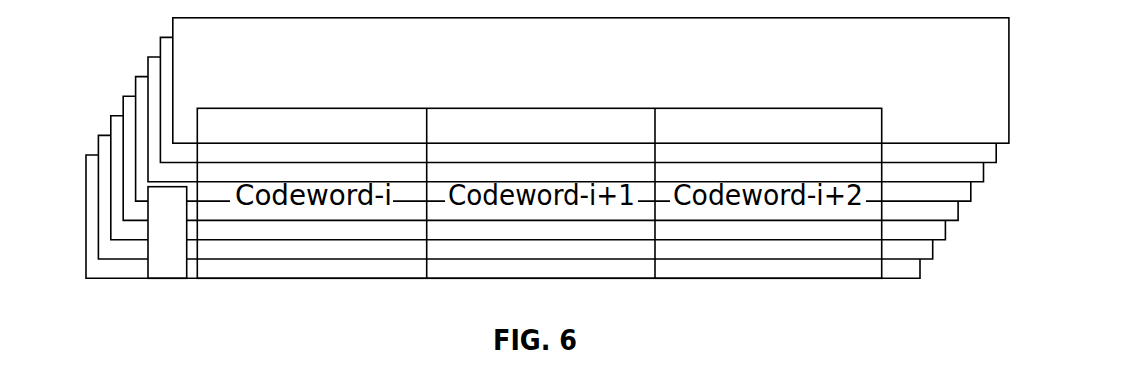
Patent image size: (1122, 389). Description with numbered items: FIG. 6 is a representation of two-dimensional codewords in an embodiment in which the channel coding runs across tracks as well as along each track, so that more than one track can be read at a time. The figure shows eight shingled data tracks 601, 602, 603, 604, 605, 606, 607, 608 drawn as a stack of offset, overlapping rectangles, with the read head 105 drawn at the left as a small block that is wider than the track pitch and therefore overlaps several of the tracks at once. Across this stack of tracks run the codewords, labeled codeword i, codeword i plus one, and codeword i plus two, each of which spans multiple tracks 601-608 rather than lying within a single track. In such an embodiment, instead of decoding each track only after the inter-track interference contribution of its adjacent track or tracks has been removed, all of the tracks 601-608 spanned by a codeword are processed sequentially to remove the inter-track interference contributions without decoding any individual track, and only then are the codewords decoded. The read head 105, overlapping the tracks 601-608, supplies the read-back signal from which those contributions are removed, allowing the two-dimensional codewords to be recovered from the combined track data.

The read head 105 is at (148, 245).
The track 601 is at (921, 270).
The track 602 is at (934, 250).
The track 603 is at (947, 235).
The track 604 is at (960, 212).
The track 605 is at (972, 192).
The track 606 is at (985, 173).
The track 607 is at (997, 153).
The track 608 is at (1009, 81).